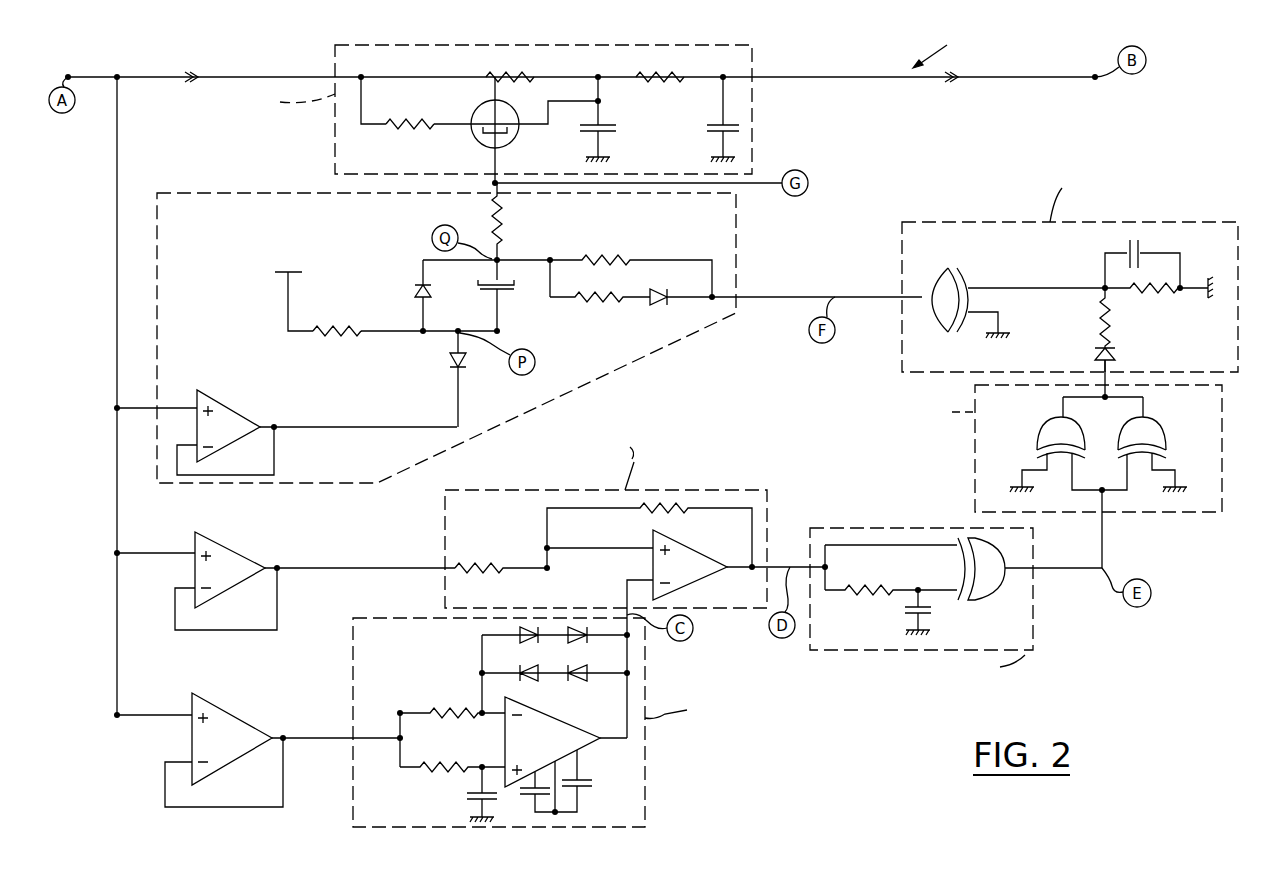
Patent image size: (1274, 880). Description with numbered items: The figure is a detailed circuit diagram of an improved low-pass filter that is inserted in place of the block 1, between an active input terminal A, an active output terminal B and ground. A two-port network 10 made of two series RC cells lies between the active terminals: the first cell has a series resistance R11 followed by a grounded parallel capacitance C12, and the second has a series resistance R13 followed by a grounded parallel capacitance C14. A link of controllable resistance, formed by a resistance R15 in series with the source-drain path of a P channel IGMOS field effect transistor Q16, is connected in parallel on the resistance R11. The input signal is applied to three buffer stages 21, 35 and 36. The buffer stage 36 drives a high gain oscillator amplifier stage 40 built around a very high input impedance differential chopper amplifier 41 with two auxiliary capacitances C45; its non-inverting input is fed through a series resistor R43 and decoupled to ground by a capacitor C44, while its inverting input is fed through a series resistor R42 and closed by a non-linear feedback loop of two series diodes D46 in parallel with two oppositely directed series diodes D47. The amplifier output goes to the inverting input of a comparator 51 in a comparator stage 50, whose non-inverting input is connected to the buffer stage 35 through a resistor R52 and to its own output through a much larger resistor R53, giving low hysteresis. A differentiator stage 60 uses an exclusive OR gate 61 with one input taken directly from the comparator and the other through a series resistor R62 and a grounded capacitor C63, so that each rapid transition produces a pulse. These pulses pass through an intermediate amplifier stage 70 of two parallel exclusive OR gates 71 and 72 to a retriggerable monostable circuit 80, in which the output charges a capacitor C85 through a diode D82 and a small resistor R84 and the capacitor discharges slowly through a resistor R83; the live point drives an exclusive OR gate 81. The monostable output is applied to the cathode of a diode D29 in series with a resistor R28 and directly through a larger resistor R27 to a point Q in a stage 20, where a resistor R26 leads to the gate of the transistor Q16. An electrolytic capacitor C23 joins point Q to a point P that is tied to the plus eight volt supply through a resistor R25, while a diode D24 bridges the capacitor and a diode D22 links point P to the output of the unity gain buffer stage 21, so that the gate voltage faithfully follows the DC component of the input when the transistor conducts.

The block 1 is at (939, 53).
The two-port network 10 is at (328, 60).
The stage 20 is at (182, 193).
The buffer amplifier stage 21 is at (232, 405).
The buffer stage 35 is at (240, 548).
The buffer stage 36 is at (244, 715).
The oscillator amplifier stage 40 is at (645, 742).
The differential chopper amplifier 41 is at (582, 736).
The comparator stage 50 is at (654, 490).
The comparator 51 is at (700, 546).
The differentiator stage 60 is at (872, 528).
The exclusive OR gate 61 is at (990, 595).
The intermediate amplifier stage 70 is at (972, 458).
The exclusive OR gate 71 is at (1040, 422).
The exclusive OR gate 72 is at (1162, 424).
The retriggerable monostable circuit 80 is at (1005, 222).
The exclusive OR gate 81 is at (946, 268).
The series resistance R11 is at (504, 74).
The series resistance R13 is at (660, 74).
The resistance R15 is at (416, 113).
The field effect transistor Q16 is at (512, 135).
The parallel capacitance C12 is at (614, 141).
The parallel capacitance C14 is at (718, 124).
The diode D22 is at (452, 370).
The electrolytic capacitor C23 is at (500, 296).
The diode D24 is at (418, 282).
The resistor R25 is at (367, 340).
The resistor R26 is at (506, 208).
The resistor R27 is at (592, 258).
The resistor R28 is at (600, 307).
The diode D29 is at (678, 309).
The series resistor R42 is at (441, 706).
The series resistor R43 is at (433, 775).
The capacitor C44 is at (468, 805).
The auxiliary capacitances C45 is at (540, 792).
The diodes D46 is at (581, 682).
The diodes D47 is at (581, 642).
The resistor R52 is at (471, 562).
The resistor R53 is at (655, 514).
The series resistor R62 is at (855, 598).
The parallel capacitor C63 is at (925, 618).
The diode D82 is at (1117, 356).
The resistor R83 is at (1172, 310).
The resistor R84 is at (1125, 328).
The capacitor C85 is at (1125, 245).